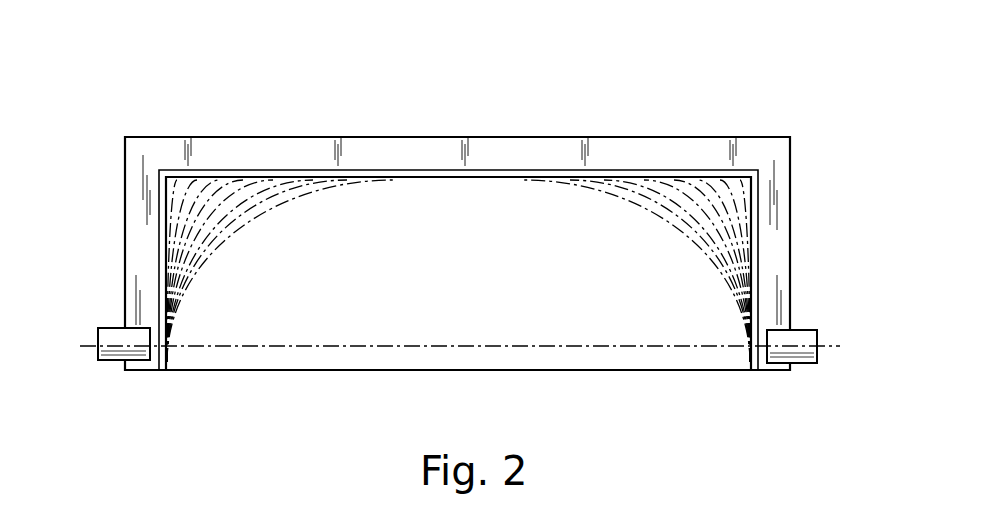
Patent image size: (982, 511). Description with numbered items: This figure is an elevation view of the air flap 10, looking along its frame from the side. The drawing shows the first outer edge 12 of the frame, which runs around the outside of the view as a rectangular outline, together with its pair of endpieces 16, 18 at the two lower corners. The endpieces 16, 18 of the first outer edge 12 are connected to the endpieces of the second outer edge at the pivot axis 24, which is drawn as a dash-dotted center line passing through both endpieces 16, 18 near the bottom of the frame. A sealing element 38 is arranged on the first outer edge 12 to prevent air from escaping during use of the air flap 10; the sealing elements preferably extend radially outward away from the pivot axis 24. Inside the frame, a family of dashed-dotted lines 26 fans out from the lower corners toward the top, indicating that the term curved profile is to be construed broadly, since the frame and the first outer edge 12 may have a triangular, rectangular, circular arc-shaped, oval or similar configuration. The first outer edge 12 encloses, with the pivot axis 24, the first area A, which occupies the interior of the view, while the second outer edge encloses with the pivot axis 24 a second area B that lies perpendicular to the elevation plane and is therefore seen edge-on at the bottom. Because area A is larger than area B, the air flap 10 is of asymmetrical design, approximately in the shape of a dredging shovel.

The air flap 10 is at (207, 61).
The first outer edge 12 is at (498, 136).
The sealing element 38 is at (658, 147).
The dashed-dotted lines 26 is at (705, 245).
The endpiece 18 is at (148, 305).
The endpiece 16 is at (770, 300).
The pivot axis 24 is at (829, 348).
The first area A is at (445, 290).
The second area B is at (309, 372).